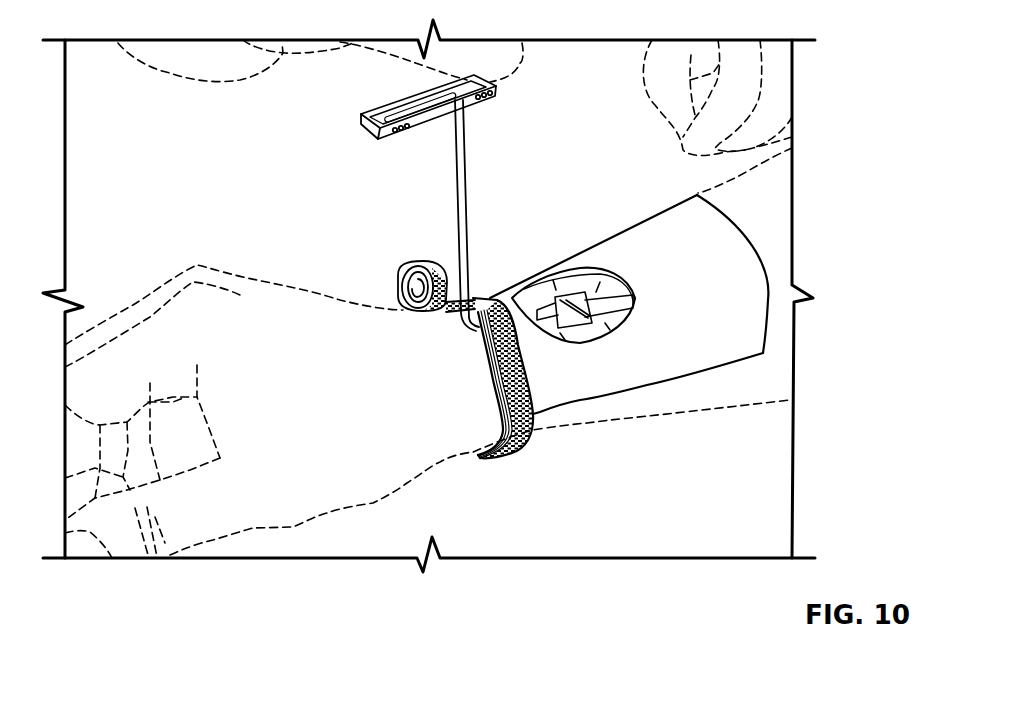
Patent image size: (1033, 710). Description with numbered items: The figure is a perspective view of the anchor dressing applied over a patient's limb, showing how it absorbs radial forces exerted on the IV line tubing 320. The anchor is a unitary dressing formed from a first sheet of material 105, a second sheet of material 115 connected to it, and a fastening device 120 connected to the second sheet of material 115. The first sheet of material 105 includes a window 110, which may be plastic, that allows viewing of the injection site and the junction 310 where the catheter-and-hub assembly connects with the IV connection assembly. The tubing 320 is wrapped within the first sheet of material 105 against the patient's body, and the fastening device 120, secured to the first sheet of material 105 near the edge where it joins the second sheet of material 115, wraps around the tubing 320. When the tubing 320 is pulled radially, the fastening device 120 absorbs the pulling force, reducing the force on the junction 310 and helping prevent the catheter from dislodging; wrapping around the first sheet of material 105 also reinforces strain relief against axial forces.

The first sheet of material 105 is at (692, 350).
The window 110 is at (580, 283).
The junction 310 is at (600, 327).
The fastening device 120 is at (533, 378).
The second sheet of material 115 is at (500, 406).
The IV line tubing 320 is at (467, 172).